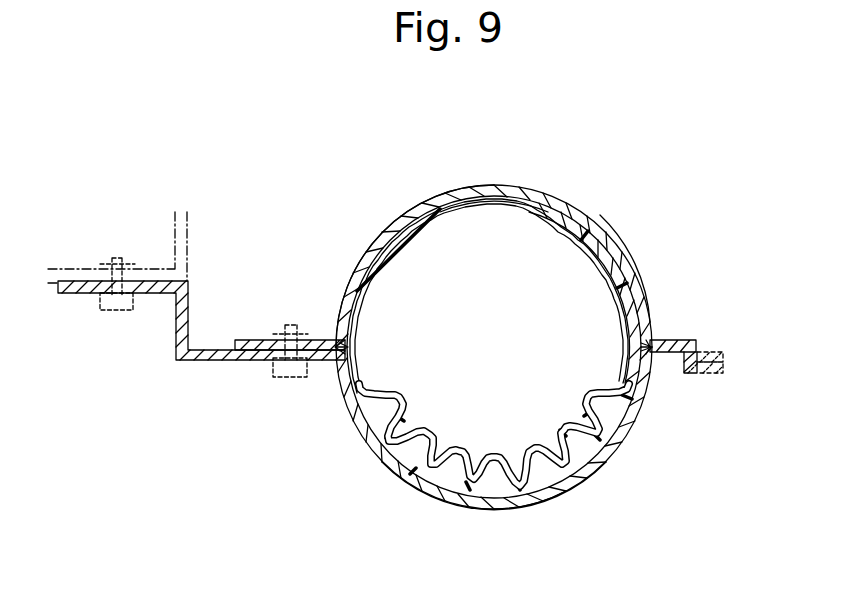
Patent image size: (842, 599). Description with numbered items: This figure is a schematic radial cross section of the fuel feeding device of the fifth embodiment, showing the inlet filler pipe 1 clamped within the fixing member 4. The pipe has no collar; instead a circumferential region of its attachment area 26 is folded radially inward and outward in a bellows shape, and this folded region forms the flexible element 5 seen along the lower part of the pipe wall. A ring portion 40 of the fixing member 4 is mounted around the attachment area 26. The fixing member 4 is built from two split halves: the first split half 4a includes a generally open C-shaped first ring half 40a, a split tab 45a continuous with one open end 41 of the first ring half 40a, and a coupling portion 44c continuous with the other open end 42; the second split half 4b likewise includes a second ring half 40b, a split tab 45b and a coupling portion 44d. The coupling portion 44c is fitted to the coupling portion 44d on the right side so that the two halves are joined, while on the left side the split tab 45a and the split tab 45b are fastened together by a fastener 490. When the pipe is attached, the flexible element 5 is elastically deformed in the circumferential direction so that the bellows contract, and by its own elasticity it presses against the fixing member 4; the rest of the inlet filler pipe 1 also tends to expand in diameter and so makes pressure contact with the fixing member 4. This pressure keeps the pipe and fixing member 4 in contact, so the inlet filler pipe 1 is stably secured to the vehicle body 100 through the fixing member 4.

The inlet filler pipe 1 is at (426, 210).
The fixing member 4 is at (562, 500).
The first split half 4a is at (477, 516).
The second split half 4b is at (582, 204).
The flexible element 5 is at (426, 505).
The attachment area 26 is at (582, 452).
The ring portion 40 is at (633, 428).
The first ring half 40a is at (534, 507).
The second ring half 40b is at (514, 195).
The one open end 41 is at (325, 326).
The other open end 42 is at (652, 340).
The coupling portion 44c is at (664, 354).
The coupling portion 44d is at (692, 346).
The split tab 45a is at (250, 360).
The split tab 45b is at (254, 340).
The vehicle body 100 is at (147, 278).
The fastener 490 is at (290, 384).